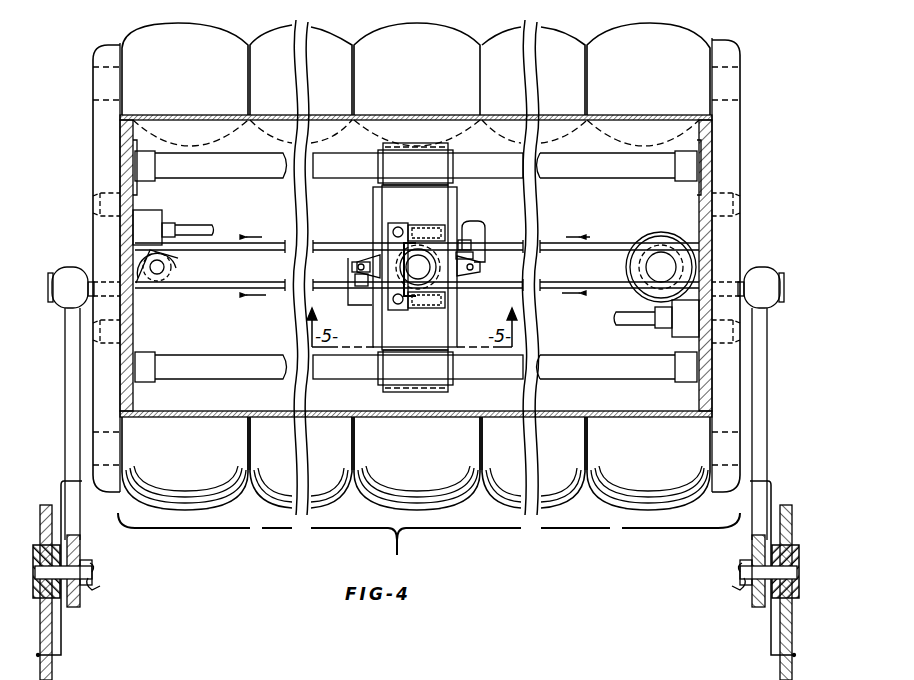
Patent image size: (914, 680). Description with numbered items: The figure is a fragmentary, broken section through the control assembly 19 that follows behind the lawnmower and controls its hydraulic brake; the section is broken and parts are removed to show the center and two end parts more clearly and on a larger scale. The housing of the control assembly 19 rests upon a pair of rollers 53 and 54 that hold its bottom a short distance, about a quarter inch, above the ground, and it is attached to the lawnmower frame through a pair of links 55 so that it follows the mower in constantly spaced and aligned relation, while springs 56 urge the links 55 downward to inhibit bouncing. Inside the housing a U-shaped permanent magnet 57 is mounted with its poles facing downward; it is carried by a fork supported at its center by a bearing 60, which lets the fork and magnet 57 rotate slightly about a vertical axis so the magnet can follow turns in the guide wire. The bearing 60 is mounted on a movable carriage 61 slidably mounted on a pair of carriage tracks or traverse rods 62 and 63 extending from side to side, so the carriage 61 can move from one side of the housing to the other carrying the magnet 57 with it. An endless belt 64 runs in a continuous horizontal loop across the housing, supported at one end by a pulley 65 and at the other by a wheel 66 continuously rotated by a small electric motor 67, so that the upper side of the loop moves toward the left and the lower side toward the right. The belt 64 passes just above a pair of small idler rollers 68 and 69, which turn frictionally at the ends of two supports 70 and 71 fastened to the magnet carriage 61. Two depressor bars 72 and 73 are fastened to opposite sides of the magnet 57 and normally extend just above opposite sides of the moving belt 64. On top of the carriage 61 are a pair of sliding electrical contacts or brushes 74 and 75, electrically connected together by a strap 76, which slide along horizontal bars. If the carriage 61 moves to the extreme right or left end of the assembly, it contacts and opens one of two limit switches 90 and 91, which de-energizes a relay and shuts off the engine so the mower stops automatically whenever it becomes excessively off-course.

The control assembly 19 is at (120, 153).
The roller 53 is at (140, 34).
The roller 54 is at (200, 468).
The link 55 is at (68, 362).
The spring 56 is at (62, 486).
The U-shaped permanent magnet 57 is at (458, 200).
The bearing 60 is at (436, 267).
The movable carriage 61 is at (392, 203).
The traverse rod 62 is at (218, 172).
The traverse rod 63 is at (233, 343).
The endless belt 64 is at (230, 282).
The pulley 65 is at (172, 268).
The wheel 66 is at (652, 242).
The electric motor 67 is at (665, 238).
The idler roller 68 is at (473, 240).
The idler roller 69 is at (352, 300).
The support 70 is at (486, 240).
The support 71 is at (372, 262).
The depressor bar 72 is at (485, 263).
The depressor bar 73 is at (353, 292).
The brush 74 is at (440, 216).
The brush 75 is at (438, 308).
The strap 76 is at (398, 302).
The limit switch 90 is at (680, 328).
The limit switch 91 is at (148, 218).